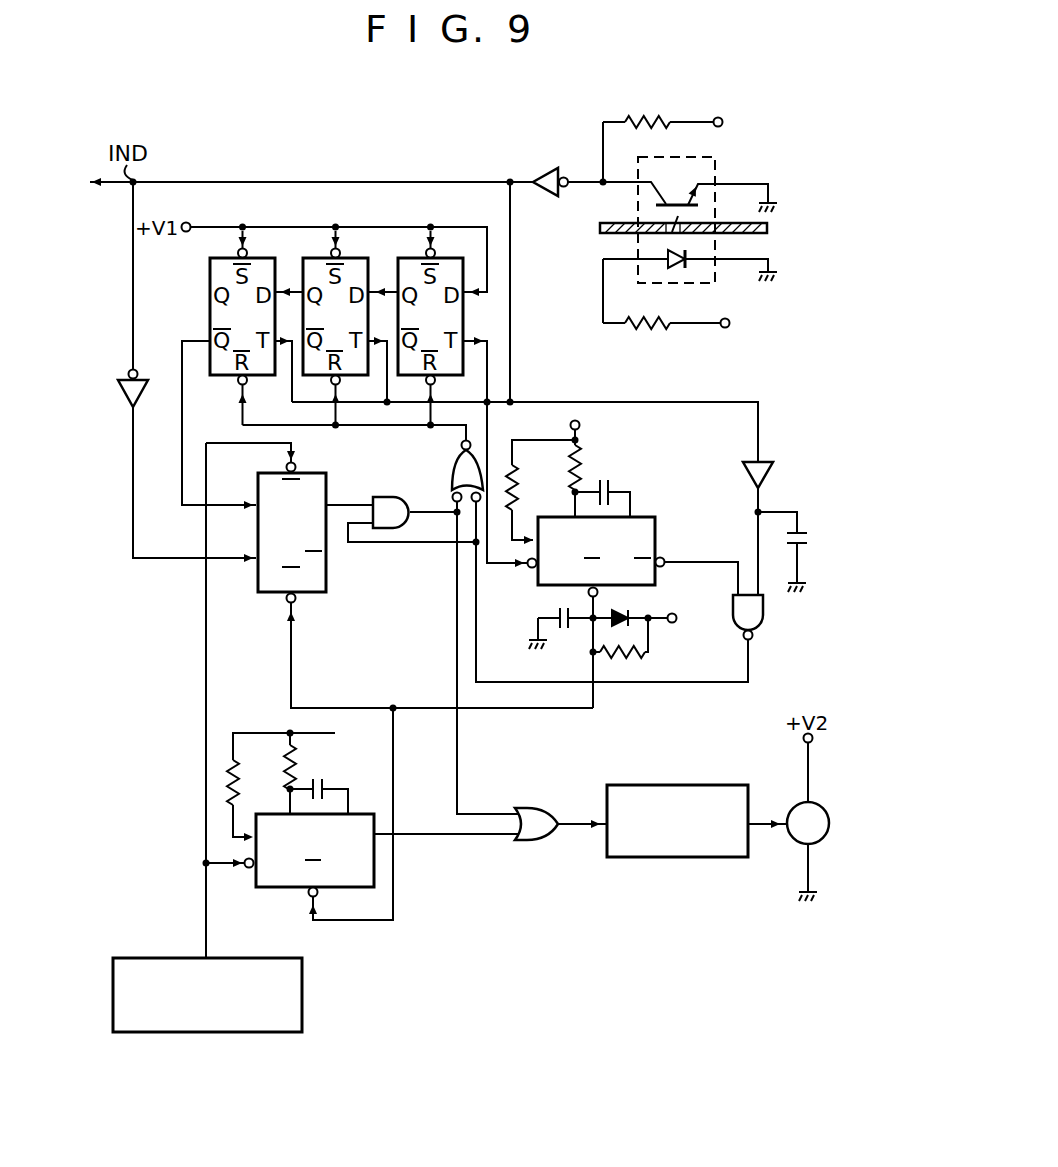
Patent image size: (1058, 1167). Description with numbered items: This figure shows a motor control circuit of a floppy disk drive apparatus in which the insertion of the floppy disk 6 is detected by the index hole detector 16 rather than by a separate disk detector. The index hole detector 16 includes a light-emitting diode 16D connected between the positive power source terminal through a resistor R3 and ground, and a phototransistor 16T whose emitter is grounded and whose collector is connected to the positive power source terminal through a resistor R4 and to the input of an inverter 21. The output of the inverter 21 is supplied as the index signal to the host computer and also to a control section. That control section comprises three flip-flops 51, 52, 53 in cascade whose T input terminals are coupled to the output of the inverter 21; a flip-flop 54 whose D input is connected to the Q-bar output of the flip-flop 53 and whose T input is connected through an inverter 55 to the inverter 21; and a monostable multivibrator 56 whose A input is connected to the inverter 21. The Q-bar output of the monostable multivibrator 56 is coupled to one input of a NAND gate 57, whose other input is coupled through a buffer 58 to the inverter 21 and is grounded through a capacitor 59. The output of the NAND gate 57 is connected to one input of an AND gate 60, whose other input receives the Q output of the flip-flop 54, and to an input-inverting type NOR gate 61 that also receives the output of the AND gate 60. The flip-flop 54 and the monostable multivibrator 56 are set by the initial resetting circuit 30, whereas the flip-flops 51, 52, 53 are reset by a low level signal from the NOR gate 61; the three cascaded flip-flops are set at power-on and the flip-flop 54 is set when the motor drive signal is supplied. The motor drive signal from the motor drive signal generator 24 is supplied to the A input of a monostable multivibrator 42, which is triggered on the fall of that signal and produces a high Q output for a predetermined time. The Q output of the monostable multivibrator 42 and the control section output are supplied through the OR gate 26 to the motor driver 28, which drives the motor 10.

The inverter 21 is at (546, 170).
The index hole detector 16 is at (638, 210).
The phototransistor 16T is at (665, 184).
The light-emitting diode 16D is at (681, 270).
The floppy disk 6 is at (768, 233).
The resistor R4 is at (650, 117).
The resistor R3 is at (650, 330).
The flip-flop 53 is at (258, 258).
The flip-flop 52 is at (352, 258).
The flip-flop 51 is at (447, 258).
The inverter 55 is at (125, 398).
The flip-flop 54 is at (326, 578).
The AND gate 60 is at (380, 498).
The input-inverting type NOR gate 61 is at (452, 474).
The monostable multivibrator 56 is at (657, 524).
The initial resetting circuit 30 is at (590, 627).
The NAND gate 57 is at (754, 640).
The buffer 58 is at (746, 478).
The capacitor 59 is at (808, 540).
The monostable multivibrator 42 is at (272, 887).
The OR gate 26 is at (545, 842).
The motor driver 28 is at (678, 857).
The motor 10 is at (797, 842).
The motor drive signal generator 24 is at (302, 988).